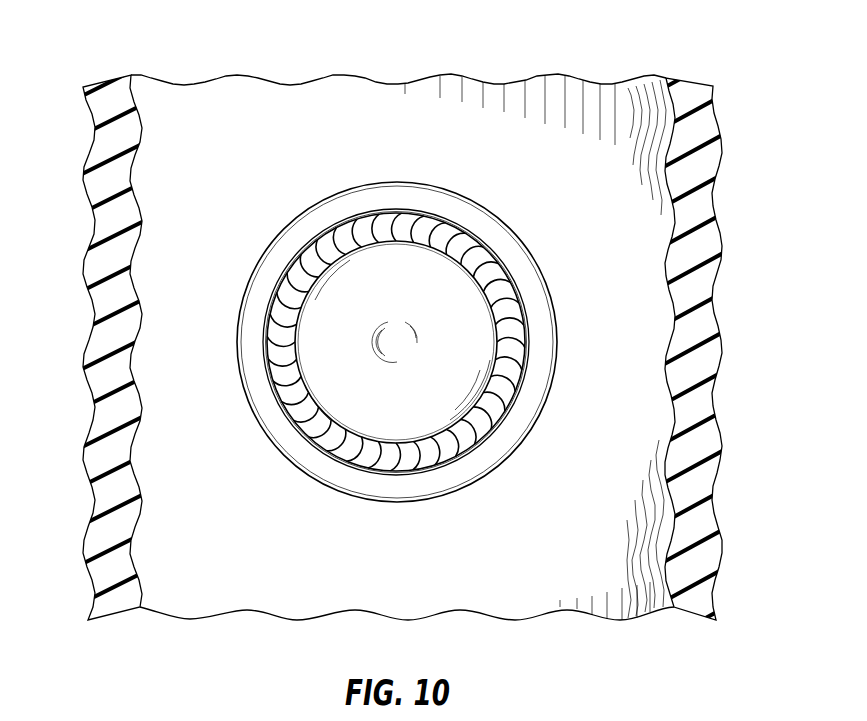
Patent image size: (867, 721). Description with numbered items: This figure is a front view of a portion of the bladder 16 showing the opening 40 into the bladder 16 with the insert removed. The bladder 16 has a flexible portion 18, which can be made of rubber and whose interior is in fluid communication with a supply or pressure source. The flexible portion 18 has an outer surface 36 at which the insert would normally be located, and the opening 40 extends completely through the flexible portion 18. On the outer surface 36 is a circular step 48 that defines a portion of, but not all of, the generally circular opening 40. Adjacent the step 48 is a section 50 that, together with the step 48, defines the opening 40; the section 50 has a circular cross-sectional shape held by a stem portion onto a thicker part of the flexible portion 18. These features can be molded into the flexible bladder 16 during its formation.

The bladder 16 is at (146, 50).
The flexible portion 18 is at (310, 88).
The outer surface 36 is at (620, 533).
The opening 40 is at (480, 297).
The step 48 is at (545, 350).
The section 50 is at (490, 428).